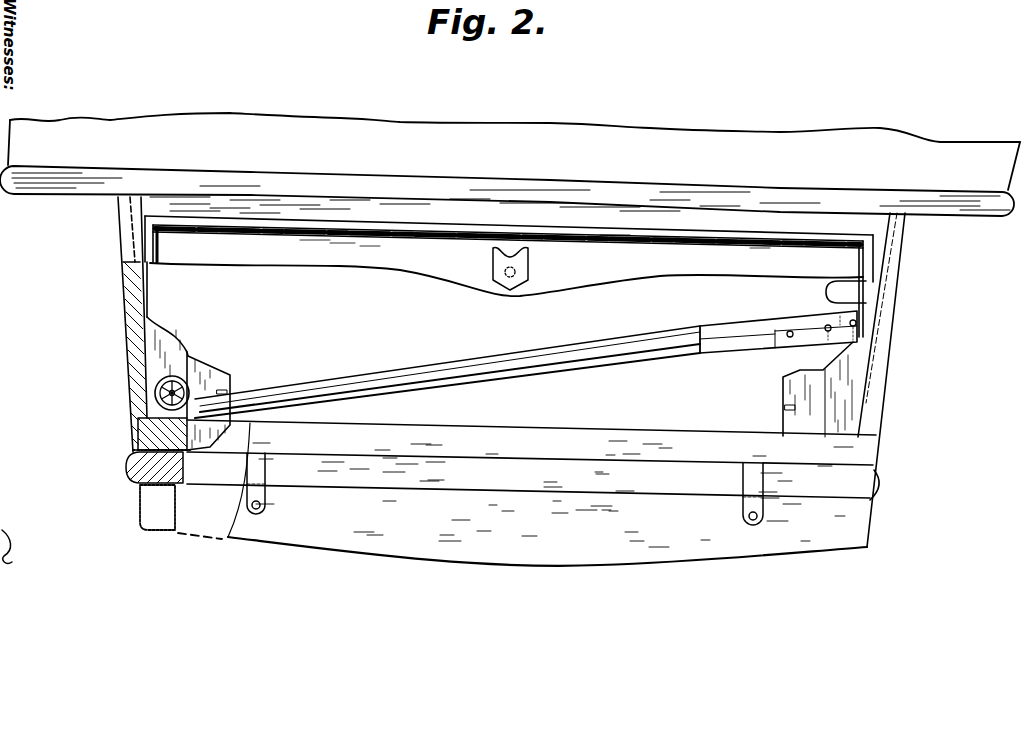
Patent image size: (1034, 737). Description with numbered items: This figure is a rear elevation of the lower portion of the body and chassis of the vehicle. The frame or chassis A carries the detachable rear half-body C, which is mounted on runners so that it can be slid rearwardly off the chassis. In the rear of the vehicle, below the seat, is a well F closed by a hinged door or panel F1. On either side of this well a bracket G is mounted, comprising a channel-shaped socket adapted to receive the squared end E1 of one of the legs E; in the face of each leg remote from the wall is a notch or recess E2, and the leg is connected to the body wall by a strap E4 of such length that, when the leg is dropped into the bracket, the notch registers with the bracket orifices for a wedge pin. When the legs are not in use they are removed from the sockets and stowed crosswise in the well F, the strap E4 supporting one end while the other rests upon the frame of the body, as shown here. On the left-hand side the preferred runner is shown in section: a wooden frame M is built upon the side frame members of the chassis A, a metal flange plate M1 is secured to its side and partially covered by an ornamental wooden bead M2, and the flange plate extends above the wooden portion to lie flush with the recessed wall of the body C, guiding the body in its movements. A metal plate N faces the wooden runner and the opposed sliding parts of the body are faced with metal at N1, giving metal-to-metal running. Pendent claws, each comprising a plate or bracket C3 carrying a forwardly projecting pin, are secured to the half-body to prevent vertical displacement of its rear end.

The frame or chassis A is at (528, 493).
The rear half-body C is at (128, 335).
The plate or bracket C3 is at (258, 478).
The leg E is at (648, 345).
The squared end E1 is at (720, 362).
The notch or recess E2 is at (857, 325).
The strap E4 is at (827, 285).
The well F is at (745, 300).
The hinged door or panel F1 is at (468, 270).
The bracket G is at (790, 397).
The wooden frame M is at (140, 484).
The metal flange plate M1 is at (140, 445).
The wooden bead M2 is at (133, 458).
The metal plate N is at (185, 452).
The metal facing N1 is at (150, 413).